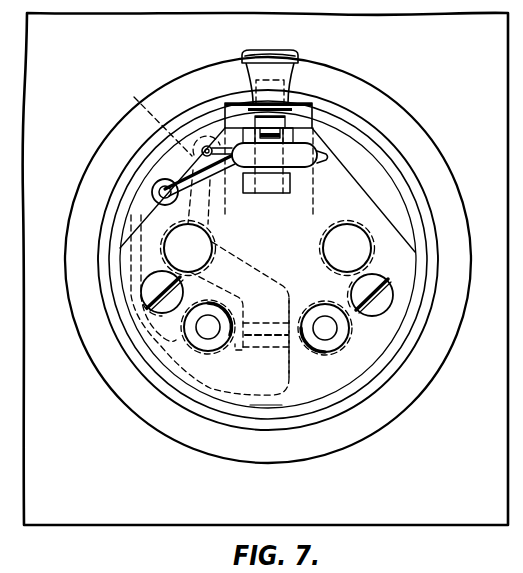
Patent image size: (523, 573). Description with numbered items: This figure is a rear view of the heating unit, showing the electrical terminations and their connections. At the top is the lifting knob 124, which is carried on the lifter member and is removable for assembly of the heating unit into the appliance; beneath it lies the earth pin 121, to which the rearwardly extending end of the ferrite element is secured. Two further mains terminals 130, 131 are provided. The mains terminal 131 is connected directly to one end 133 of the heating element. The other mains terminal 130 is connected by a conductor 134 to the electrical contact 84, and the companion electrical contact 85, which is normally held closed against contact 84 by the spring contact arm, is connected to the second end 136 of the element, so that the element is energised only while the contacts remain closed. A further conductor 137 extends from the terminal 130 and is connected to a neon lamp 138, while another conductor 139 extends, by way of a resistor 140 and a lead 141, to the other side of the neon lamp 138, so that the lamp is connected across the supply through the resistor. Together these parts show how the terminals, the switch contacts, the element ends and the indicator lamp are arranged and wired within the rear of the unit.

The lifting knob 124 is at (287, 58).
The earth pin 121 is at (266, 183).
The neon lamp 138 is at (296, 159).
The resistor 140 is at (152, 185).
The lead 141 is at (182, 180).
The conductor 137 is at (146, 117).
The mains terminal 130 is at (203, 241).
The mains terminal 131 is at (347, 236).
The second end of the element 136 is at (199, 325).
The end of the element 133 is at (322, 332).
The conductor 134 is at (258, 278).
The conductor 139 is at (135, 270).
The electrical contact 84 is at (266, 328).
The electrical contact 85 is at (266, 342).